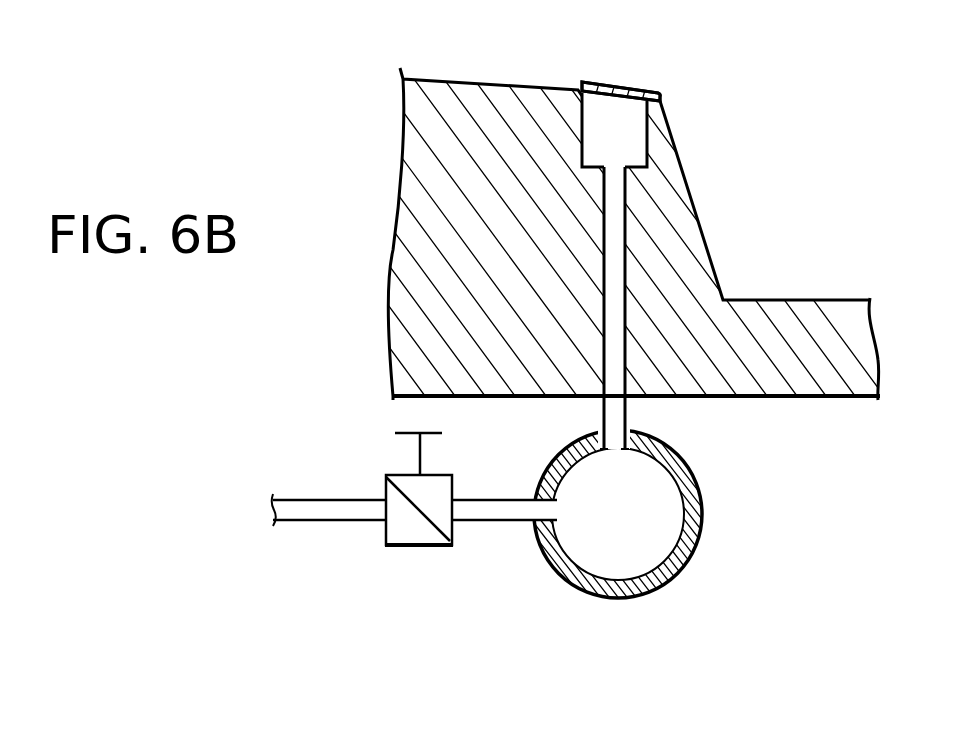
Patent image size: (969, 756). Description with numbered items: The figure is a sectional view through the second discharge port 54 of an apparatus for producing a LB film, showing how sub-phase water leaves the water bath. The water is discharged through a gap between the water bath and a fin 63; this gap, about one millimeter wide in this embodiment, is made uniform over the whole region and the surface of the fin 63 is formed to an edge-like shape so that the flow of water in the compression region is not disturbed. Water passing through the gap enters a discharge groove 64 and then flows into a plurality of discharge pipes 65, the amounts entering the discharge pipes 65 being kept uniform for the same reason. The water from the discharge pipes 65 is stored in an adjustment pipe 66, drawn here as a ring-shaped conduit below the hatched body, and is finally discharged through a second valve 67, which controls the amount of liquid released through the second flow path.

The second discharge port 54 is at (662, 65).
The fin 63 is at (582, 84).
The discharge groove 64 is at (580, 142).
The discharge pipes 65 is at (625, 357).
The adjustment pipe 66 is at (693, 480).
The second valve 67 is at (423, 548).